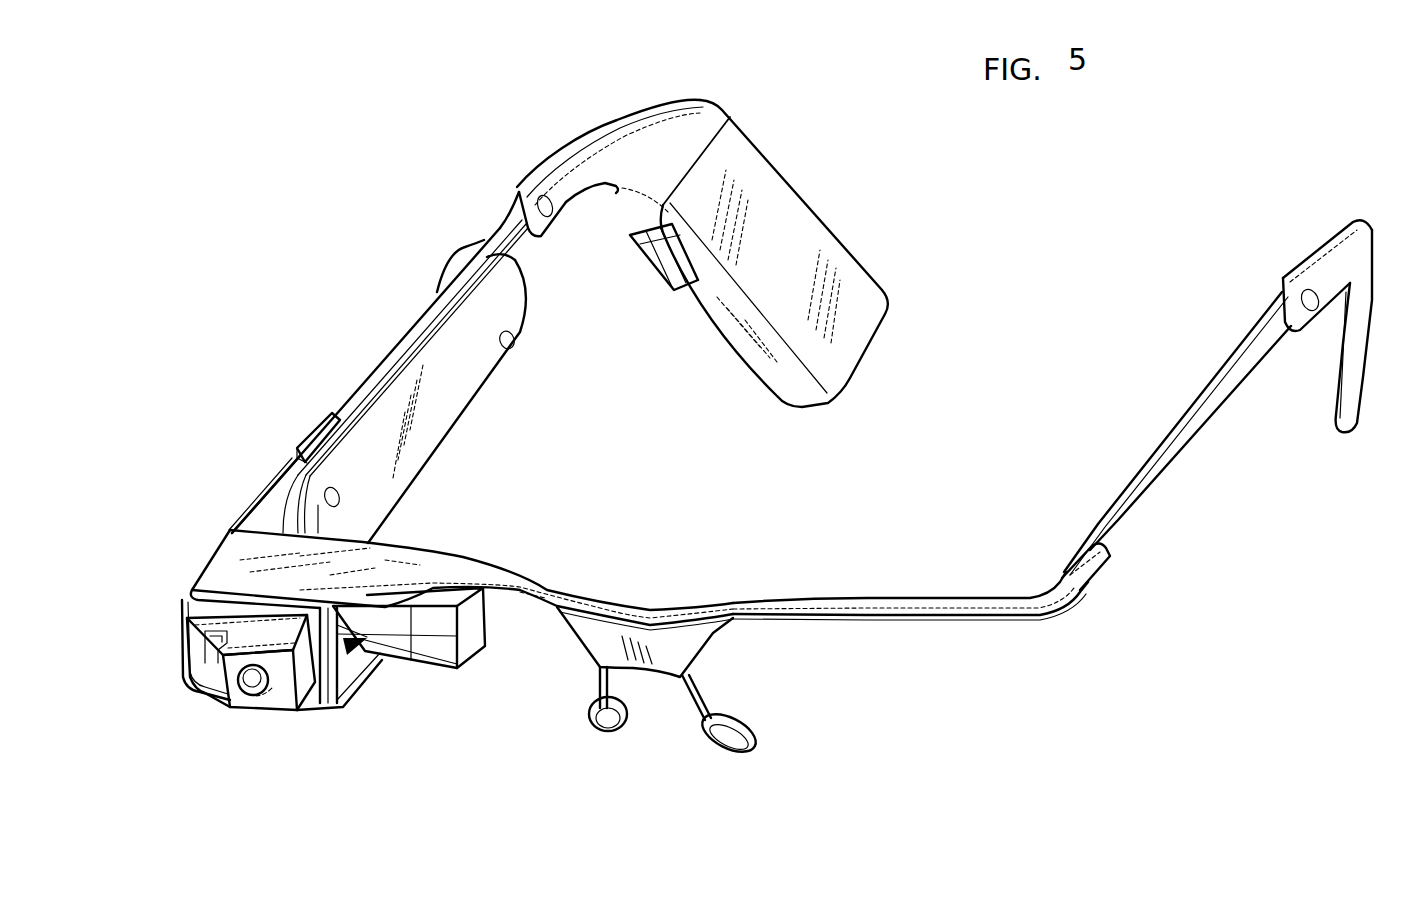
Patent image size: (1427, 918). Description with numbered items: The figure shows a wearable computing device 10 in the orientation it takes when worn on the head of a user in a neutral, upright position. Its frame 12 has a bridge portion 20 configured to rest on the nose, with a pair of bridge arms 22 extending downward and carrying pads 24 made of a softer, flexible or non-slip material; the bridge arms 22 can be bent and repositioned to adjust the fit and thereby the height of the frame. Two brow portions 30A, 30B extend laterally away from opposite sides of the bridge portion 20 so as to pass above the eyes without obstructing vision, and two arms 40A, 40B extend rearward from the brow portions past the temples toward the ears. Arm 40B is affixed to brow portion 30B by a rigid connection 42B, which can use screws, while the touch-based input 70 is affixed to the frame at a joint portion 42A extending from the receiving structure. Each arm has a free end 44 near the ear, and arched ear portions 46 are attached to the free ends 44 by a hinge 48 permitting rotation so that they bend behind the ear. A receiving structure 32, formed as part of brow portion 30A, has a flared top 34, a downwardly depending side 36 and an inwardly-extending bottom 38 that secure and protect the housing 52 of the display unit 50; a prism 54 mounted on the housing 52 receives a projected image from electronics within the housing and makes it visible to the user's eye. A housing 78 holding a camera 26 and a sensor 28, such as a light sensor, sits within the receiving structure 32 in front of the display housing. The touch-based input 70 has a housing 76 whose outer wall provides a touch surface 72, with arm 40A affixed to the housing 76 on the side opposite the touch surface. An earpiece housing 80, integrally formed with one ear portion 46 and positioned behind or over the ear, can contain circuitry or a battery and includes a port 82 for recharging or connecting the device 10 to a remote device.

The device 10 is at (252, 344).
The frame 12 is at (946, 691).
The bridge portion 20 is at (637, 776).
The bridge arms 22 is at (598, 690).
The pads 24 is at (592, 715).
The camera 26 is at (252, 698).
The sensor 28 is at (205, 650).
The brow portion 30A is at (522, 571).
The brow portion 30B is at (874, 596).
The receiving structure 32 is at (204, 714).
The flared top 34 is at (218, 560).
The downwardly depending side 36 is at (184, 601).
The inwardly-extending bottom 38 is at (340, 708).
The arm 40A is at (476, 400).
The arm 40B is at (1150, 456).
The joint portion 42A is at (252, 513).
The rigid connection 42B is at (1147, 498).
The free ends 44 is at (512, 209).
The ear portions 46 is at (565, 204).
The hinge 48 is at (534, 170).
The display unit 50 is at (397, 704).
The housing 52 is at (413, 523).
The prism 54 is at (445, 624).
The touch-based input 70 is at (354, 337).
The touch surface 72 is at (277, 424).
The housing 76 is at (437, 285).
The housing 78 is at (300, 680).
The earpiece housing 80 is at (750, 155).
The port 82 is at (666, 287).